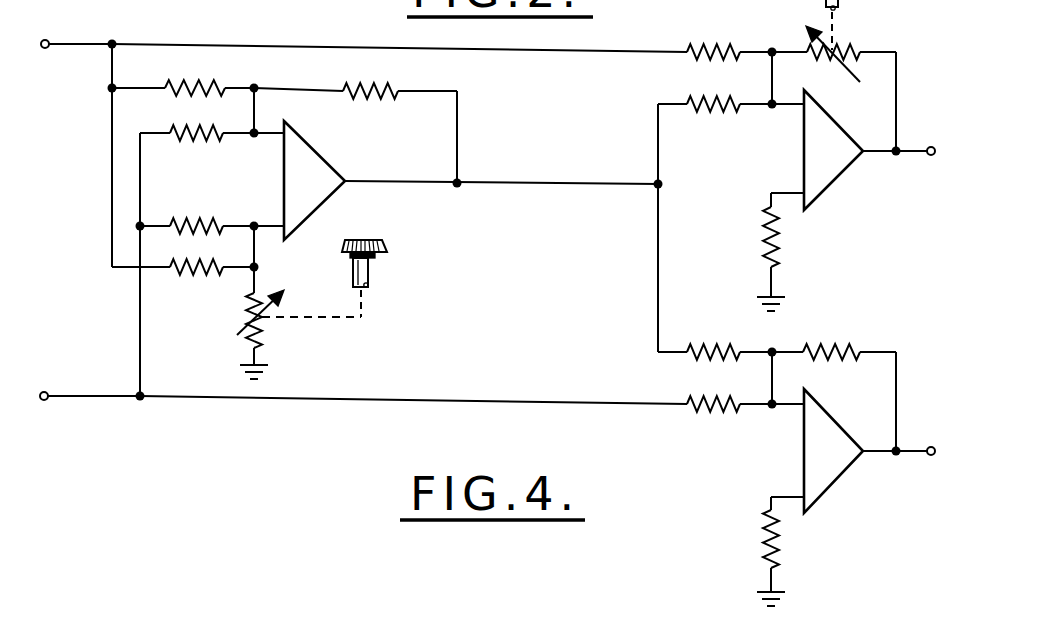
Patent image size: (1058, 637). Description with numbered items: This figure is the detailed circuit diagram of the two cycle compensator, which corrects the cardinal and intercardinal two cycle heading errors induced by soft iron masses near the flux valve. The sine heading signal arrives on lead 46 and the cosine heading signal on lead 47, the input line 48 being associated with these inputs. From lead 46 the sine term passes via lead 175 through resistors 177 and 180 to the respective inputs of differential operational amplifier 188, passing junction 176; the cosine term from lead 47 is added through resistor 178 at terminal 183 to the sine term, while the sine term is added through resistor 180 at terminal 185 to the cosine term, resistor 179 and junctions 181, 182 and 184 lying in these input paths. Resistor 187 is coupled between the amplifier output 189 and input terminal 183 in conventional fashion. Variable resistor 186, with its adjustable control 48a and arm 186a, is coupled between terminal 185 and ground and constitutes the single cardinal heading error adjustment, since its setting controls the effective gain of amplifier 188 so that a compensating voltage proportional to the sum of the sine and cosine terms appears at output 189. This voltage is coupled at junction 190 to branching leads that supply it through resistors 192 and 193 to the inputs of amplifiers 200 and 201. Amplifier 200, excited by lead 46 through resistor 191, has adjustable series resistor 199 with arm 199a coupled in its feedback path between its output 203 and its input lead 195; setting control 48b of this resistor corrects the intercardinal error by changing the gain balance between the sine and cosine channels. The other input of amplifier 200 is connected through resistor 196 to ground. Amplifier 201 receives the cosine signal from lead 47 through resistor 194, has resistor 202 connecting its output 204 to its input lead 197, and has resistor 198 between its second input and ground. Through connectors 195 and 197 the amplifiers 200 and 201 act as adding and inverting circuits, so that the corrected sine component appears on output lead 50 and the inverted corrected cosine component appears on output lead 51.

The lead 46 is at (78, 43).
The lead 47 is at (78, 394).
The conductor line 48 is at (246, 42).
The adjustment control 48a is at (388, 244).
The control 48b is at (832, 25).
The output lead 50 is at (910, 155).
The output lead 51 is at (910, 455).
The lead 175 is at (112, 74).
The junction 176 is at (108, 91).
The resistor 177 is at (185, 80).
The resistor 178 is at (205, 142).
The resistor 179 is at (206, 224).
The resistor 180 is at (194, 272).
The junction 181 is at (140, 401).
The junction 182 is at (257, 86).
The terminal 183 is at (259, 131).
The junction 184 is at (258, 231).
The terminal 185 is at (258, 270).
The variable resistor 186 is at (264, 326).
The potentiometer wiper arm 186a is at (244, 336).
The resistor 187 is at (394, 88).
The differential operational amplifier 188 is at (314, 150).
The output 189 is at (462, 180).
The junction 190 is at (656, 180).
The resistor 191 is at (716, 48).
The resistor 192 is at (712, 110).
The resistor 193 is at (716, 348).
The resistor 194 is at (712, 410).
The input lead 195 is at (770, 88).
The resistor 196 is at (780, 256).
The input lead 197 is at (770, 388).
The resistor 198 is at (760, 548).
The adjustable series resistor 199 is at (856, 50).
The potentiometer wiper arm 199a is at (858, 80).
The a.c. amplifier 200 is at (802, 163).
The amplifier 201 is at (828, 412).
The resistor 202 is at (838, 348).
The output 203 is at (898, 146).
The output 204 is at (900, 447).